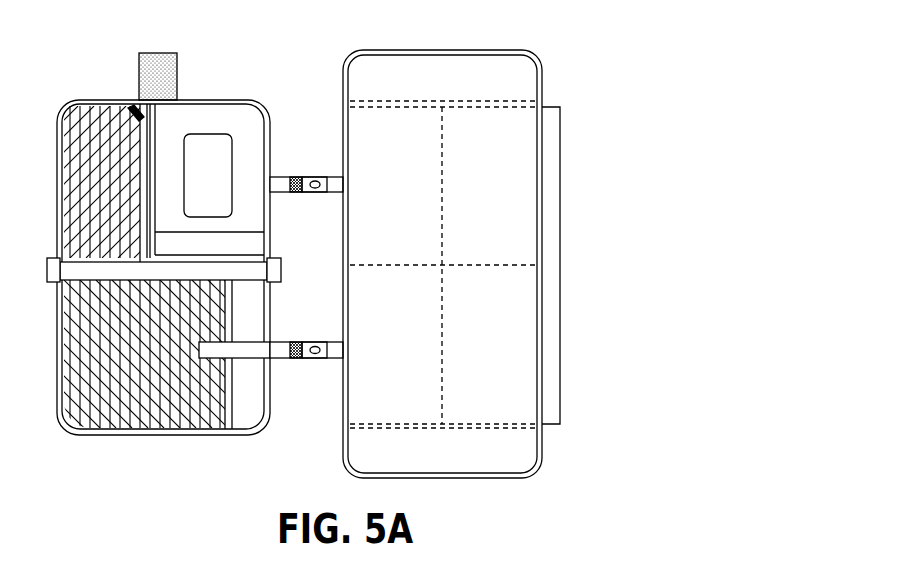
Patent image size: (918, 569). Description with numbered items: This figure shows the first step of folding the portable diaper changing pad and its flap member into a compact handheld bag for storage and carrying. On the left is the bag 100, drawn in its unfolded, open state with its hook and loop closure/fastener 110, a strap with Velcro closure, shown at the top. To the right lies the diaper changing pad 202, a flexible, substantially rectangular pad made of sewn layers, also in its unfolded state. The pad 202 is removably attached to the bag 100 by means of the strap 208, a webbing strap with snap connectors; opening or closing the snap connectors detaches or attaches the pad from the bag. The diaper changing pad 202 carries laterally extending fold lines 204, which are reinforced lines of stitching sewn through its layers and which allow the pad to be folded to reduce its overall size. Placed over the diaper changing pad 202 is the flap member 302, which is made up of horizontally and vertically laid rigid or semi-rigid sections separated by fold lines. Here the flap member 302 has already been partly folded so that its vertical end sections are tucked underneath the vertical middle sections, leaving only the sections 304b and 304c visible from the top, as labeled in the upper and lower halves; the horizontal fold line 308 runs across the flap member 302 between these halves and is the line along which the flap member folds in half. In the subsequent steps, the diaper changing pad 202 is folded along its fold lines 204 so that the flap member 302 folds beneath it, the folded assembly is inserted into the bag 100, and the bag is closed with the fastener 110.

The bag 100 is at (238, 100).
The hook and loop closure/fastener 110 is at (177, 53).
The diaper changing pad 202 is at (536, 64).
The fold lines 204 is at (427, 102).
The strap 208 is at (273, 182).
The flap member 302 is at (531, 105).
The vertical middle section 304b is at (422, 192).
The vertical end section 304c is at (518, 192).
The horizontal fold line 308 is at (378, 265).